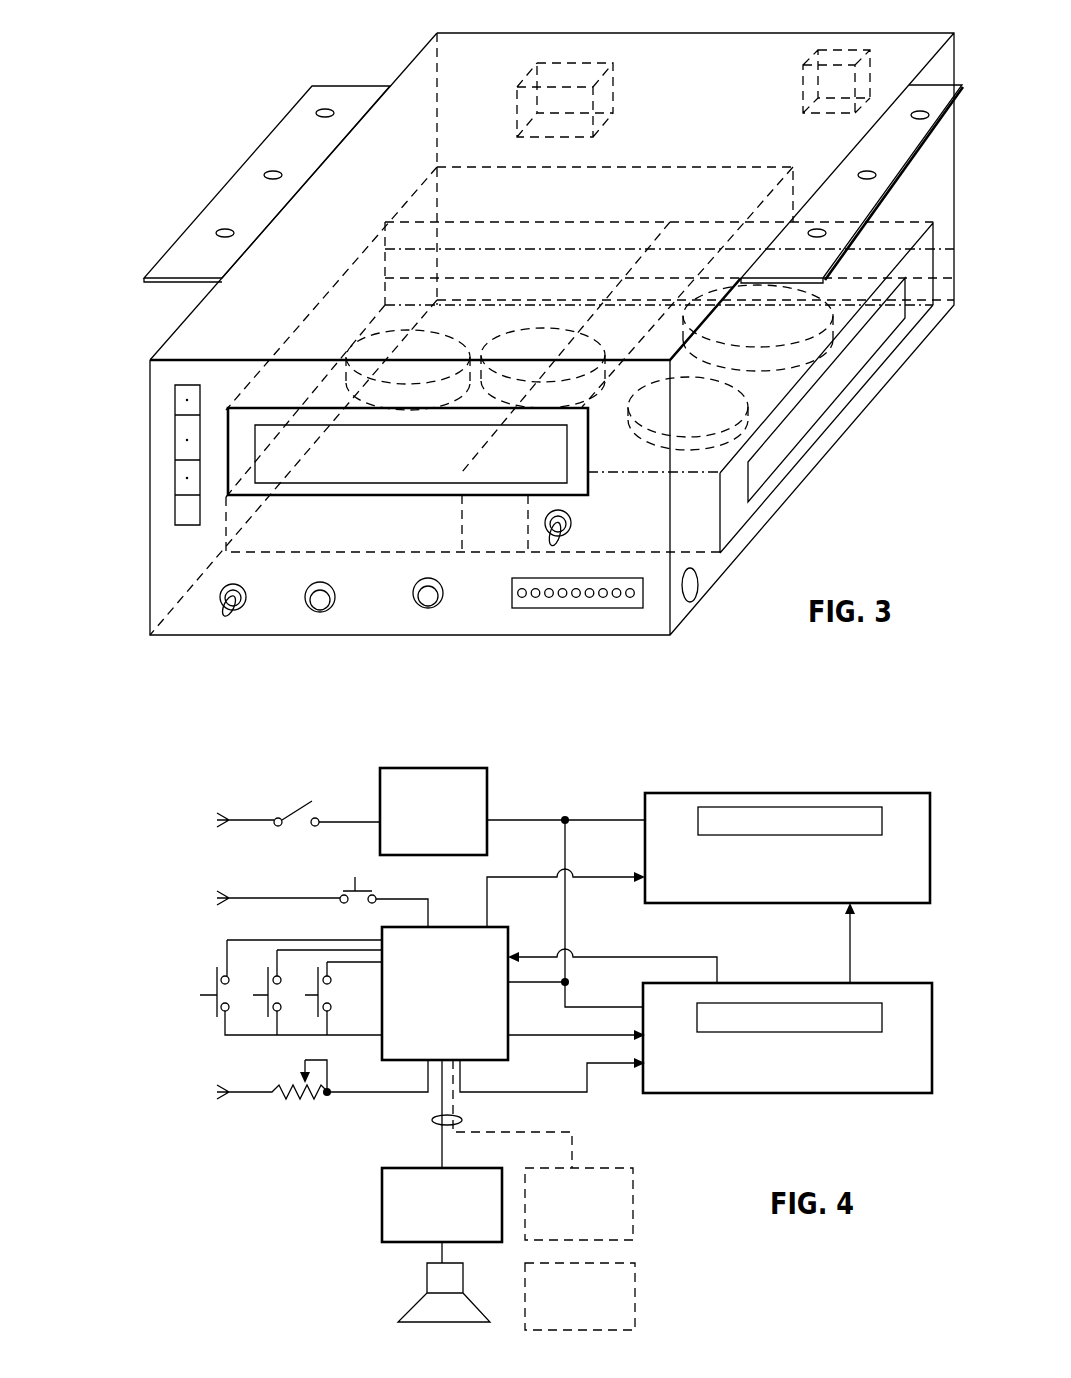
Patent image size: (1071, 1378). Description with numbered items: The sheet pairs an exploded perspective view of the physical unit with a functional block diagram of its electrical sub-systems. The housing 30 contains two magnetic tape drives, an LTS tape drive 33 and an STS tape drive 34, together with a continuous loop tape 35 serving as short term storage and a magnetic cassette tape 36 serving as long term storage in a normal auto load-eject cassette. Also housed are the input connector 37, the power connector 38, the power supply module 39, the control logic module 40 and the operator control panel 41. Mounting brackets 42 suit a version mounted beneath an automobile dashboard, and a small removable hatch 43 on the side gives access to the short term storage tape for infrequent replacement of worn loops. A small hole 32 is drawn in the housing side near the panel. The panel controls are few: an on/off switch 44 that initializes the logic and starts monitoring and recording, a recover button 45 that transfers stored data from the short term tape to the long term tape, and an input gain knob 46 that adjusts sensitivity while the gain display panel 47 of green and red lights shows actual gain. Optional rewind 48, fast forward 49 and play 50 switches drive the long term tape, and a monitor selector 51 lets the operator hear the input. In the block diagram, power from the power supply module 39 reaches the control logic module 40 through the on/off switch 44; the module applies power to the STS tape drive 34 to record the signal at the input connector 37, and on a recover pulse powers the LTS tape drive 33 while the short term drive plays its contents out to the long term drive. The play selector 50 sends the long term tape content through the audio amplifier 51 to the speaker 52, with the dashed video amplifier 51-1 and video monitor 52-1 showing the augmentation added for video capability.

In FIG. 3, the housing 30 is at (168, 339).
In FIG. 3, the mounting hole 32 is at (696, 583).
In FIG. 3, the LTS tape drive 33 is at (408, 330).
In FIG. 4, the LTS tape drive 33 is at (916, 803).
In FIG. 3, the STS tape drive 34 is at (805, 462).
In FIG. 4, the STS tape drive 34 is at (913, 1057).
In FIG. 3, the continuous loop tape 35 is at (830, 320).
In FIG. 4, the continuous loop tape 35 is at (885, 1007).
In FIG. 3, the magnetic cassette tape 36 is at (452, 335).
In FIG. 4, the magnetic cassette tape 36 is at (882, 806).
In FIG. 3, the input connector 37 is at (614, 87).
In FIG. 4, the input connector 37 is at (434, 1118).
In FIG. 3, the power connector 38 is at (803, 78).
In FIG. 3, the power supply module 39 is at (670, 180).
In FIG. 4, the power supply module 39 is at (489, 786).
In FIG. 3, the control logic module 40 is at (307, 527).
In FIG. 4, the control logic module 40 is at (494, 927).
In FIG. 3, the operator control panel 41 is at (168, 556).
In FIG. 3, the mounting brackets 42 is at (226, 194).
In FIG. 3, the removable hatch 43 is at (833, 387).
In FIG. 3, the on/off switch 44 is at (226, 612).
In FIG. 4, the on/off switch 44 is at (287, 826).
In FIG. 3, the recover button 45 is at (308, 606).
In FIG. 4, the recover button 45 is at (350, 888).
In FIG. 3, the input gain knob 46 is at (416, 605).
In FIG. 4, the input gain knob 46 is at (297, 1080).
In FIG. 3, the gain display panel 47 is at (512, 597).
In FIG. 3, the rewind switch 48 is at (175, 401).
In FIG. 4, the rewind switch 48 is at (222, 978).
In FIG. 3, the fast forward switch 49 is at (175, 443).
In FIG. 4, the fast forward switch 49 is at (273, 978).
In FIG. 3, the play selector 50 is at (175, 485).
In FIG. 4, the play selector 50 is at (323, 978).
In FIG. 3, the audio amplifier 51 is at (505, 532).
In FIG. 4, the audio amplifier 51 is at (382, 1182).
In FIG. 4, the video amplifier 51-1 is at (635, 1217).
In FIG. 4, the speaker 52 is at (427, 1280).
In FIG. 4, the video monitor 52-1 is at (637, 1305).